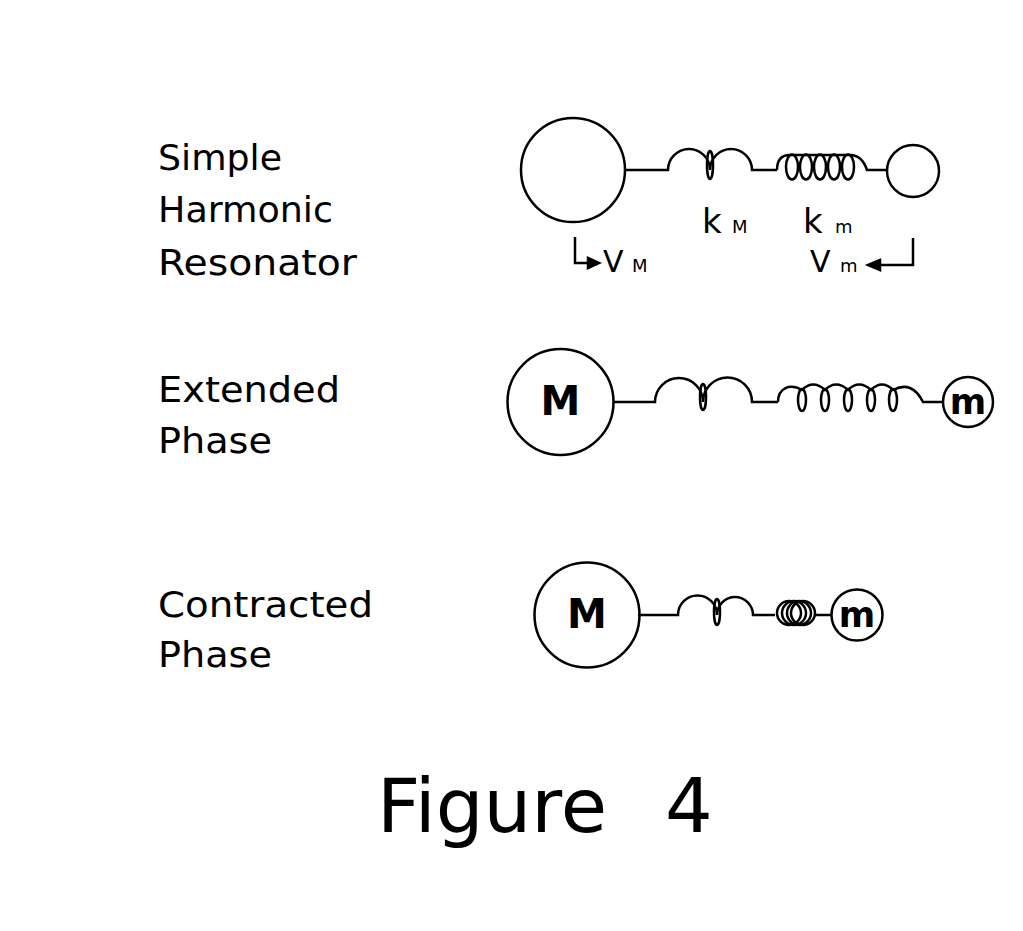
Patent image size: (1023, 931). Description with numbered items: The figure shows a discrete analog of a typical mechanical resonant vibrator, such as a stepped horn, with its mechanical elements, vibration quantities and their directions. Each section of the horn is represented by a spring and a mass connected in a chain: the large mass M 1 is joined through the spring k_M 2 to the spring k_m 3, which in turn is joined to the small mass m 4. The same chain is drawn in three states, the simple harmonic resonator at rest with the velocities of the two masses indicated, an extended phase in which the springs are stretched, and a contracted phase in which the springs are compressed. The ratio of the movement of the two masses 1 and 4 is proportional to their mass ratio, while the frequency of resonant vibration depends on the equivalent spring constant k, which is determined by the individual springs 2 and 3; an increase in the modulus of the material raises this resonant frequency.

The mass M 1 is at (597, 105).
The spring k_M 2 is at (710, 137).
The spring k_m 3 is at (822, 135).
The mass m 4 is at (913, 133).